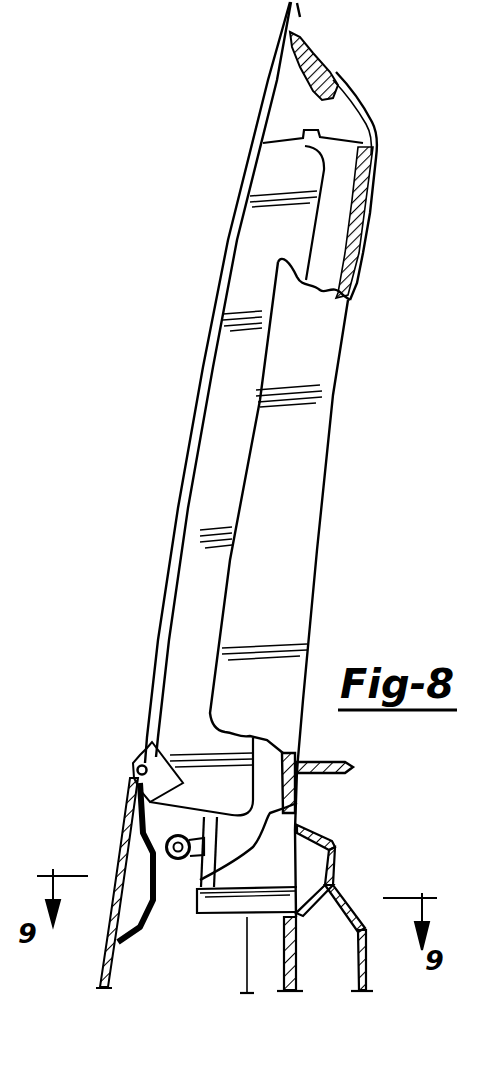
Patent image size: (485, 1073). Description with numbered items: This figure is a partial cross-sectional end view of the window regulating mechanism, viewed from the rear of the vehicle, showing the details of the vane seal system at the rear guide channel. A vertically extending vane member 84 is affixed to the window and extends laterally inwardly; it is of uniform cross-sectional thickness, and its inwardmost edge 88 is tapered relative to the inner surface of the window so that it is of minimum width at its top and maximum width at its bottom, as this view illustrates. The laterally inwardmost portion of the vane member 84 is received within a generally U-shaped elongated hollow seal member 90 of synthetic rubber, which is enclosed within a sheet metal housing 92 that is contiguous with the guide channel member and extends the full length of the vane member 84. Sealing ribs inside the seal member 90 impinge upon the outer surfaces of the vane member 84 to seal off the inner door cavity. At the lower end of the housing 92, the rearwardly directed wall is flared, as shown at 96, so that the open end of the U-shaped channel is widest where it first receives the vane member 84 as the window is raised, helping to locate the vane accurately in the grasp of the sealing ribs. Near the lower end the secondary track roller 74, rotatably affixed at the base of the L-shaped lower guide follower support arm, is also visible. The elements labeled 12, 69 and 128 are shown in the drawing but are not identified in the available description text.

The rail 12 is at (180, 508).
The lug 69 is at (305, 60).
The secondary track roller 74 is at (175, 863).
The vane member 84 is at (228, 366).
The inwardmost edge 88 is at (328, 224).
The seal member 90 is at (352, 253).
The seal housing 92 is at (365, 113).
The flared portion 96 is at (233, 905).
The wedge latch 128 is at (150, 755).